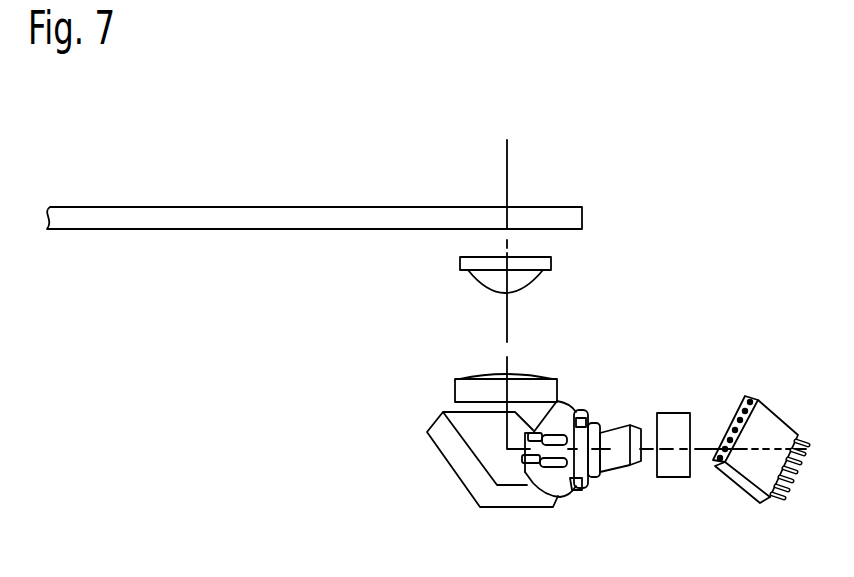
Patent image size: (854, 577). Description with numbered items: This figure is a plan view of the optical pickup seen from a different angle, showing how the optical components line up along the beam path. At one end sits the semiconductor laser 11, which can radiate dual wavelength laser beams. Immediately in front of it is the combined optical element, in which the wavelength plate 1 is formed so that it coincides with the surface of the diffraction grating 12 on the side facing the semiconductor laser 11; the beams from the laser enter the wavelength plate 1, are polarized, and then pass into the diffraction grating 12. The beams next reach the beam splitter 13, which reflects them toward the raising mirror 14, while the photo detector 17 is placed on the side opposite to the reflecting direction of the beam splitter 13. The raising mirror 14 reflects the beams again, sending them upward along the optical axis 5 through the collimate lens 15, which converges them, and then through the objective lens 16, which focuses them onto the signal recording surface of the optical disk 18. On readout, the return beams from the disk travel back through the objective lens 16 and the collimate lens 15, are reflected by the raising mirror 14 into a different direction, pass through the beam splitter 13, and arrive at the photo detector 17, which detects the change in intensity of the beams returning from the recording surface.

The wavelength plate 1 is at (599, 445).
The optical axis 5 is at (507, 345).
The semiconductor laser 11 is at (577, 408).
The diffraction grating 12 is at (622, 426).
The beam splitter 13 is at (678, 413).
The raising mirror 14 is at (480, 507).
The collimate lens 15 is at (543, 375).
The objective lens 16 is at (552, 264).
The photo detector 17 is at (757, 397).
The optical disk 18 is at (524, 207).